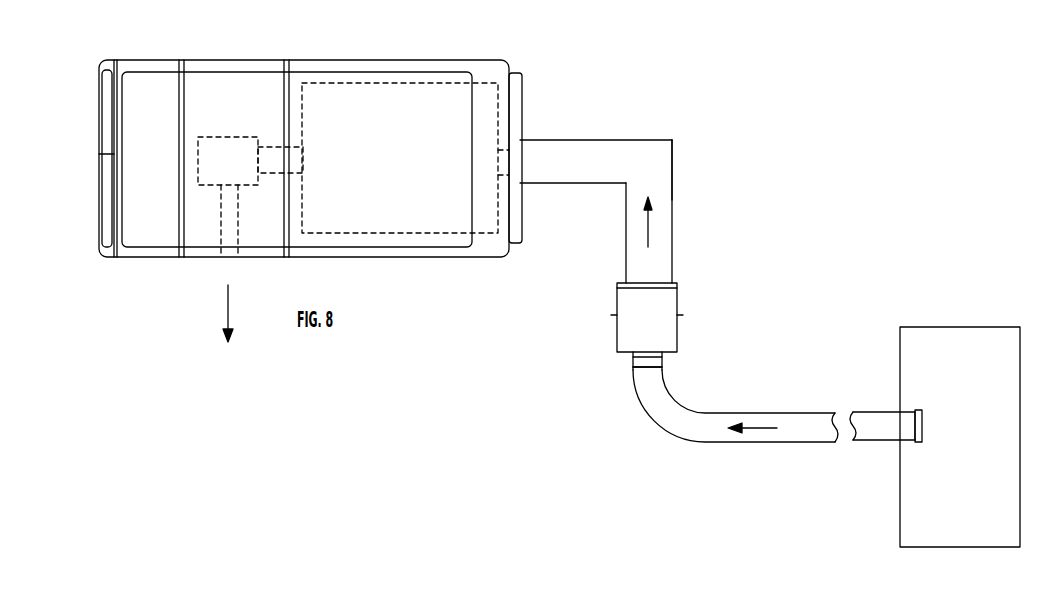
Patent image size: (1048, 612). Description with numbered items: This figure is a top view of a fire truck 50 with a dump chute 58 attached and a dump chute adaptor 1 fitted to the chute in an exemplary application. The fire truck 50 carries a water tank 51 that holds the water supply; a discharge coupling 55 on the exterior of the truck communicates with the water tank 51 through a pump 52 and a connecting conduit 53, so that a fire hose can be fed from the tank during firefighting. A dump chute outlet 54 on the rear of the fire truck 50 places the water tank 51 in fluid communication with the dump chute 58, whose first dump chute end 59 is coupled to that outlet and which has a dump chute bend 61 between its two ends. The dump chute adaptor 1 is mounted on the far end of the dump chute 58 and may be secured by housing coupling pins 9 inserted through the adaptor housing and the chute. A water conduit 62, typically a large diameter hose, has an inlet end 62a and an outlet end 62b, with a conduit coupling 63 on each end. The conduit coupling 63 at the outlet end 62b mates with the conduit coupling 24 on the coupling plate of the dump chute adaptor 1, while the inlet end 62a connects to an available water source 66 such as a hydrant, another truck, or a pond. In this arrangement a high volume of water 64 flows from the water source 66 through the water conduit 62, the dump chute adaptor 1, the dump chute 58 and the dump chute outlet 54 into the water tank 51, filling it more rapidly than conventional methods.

The dump chute adaptor 1 is at (697, 280).
The housing coupling pins 9 is at (612, 315).
The conduit coupling 24 is at (672, 359).
The fire truck 50 is at (450, 58).
The water tank 51 is at (392, 84).
The pump 52 is at (245, 132).
The connecting conduit 53 is at (268, 152).
The dump chute outlet 54 is at (514, 148).
The discharge coupling 55 is at (236, 252).
The dump chute 58 is at (625, 138).
The first dump chute end 59 is at (521, 170).
The dump chute bend 61 is at (672, 140).
The water conduit 62 is at (663, 408).
The inlet end 62a is at (916, 431).
The outlet end 62b is at (648, 358).
The conduit coupling 63 is at (650, 378).
The water 64 is at (650, 223).
The water source 66 is at (935, 333).